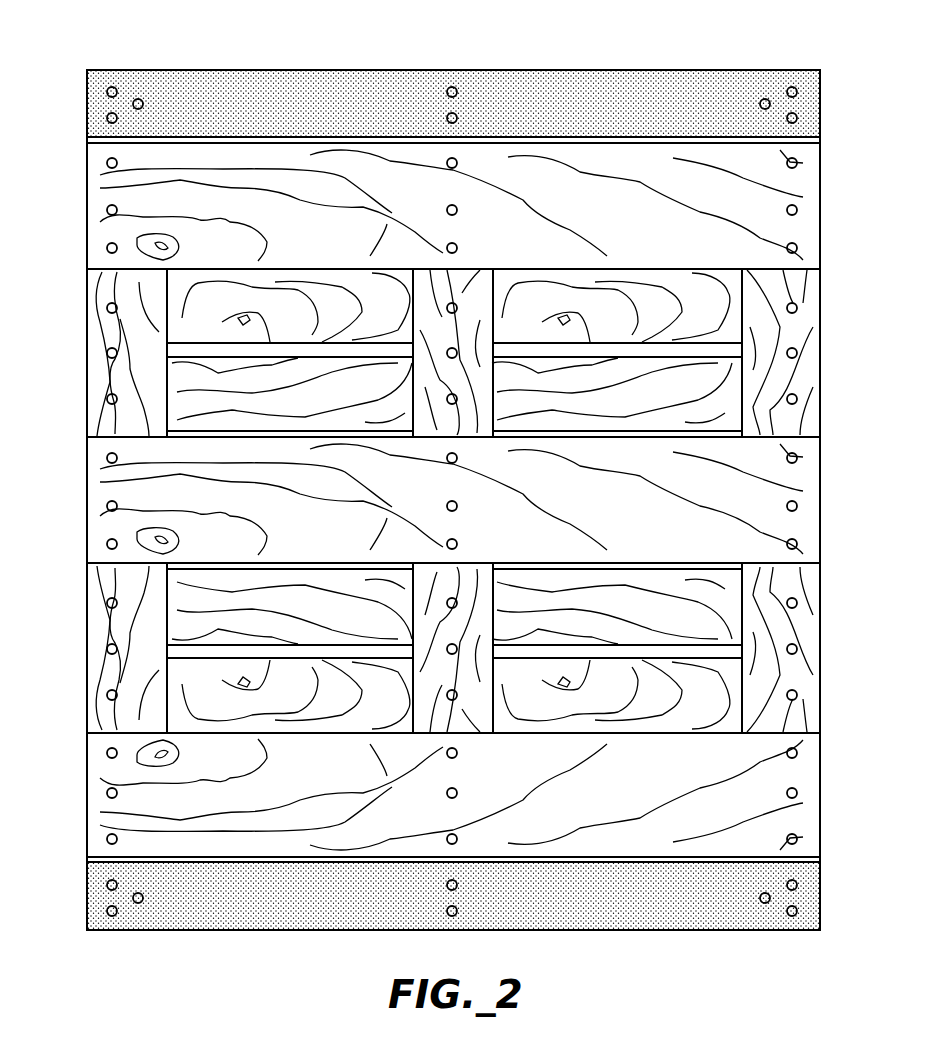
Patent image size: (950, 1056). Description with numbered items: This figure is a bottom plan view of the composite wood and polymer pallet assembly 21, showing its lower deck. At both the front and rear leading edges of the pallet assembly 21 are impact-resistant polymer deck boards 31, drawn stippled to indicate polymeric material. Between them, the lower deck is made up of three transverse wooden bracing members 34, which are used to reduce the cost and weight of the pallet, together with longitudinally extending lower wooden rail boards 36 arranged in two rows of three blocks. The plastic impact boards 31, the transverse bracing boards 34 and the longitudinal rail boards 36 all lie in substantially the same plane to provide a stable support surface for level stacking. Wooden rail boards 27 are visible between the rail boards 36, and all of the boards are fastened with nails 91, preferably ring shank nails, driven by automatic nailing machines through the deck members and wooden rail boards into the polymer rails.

The pallet assembly 21 is at (116, 46).
The rail boards 27 is at (347, 272).
The polymer deck boards 31 is at (208, 85).
The transverse bracing members 34 is at (803, 233).
The lower rail boards 36 is at (458, 285).
The nails 91 is at (462, 160).